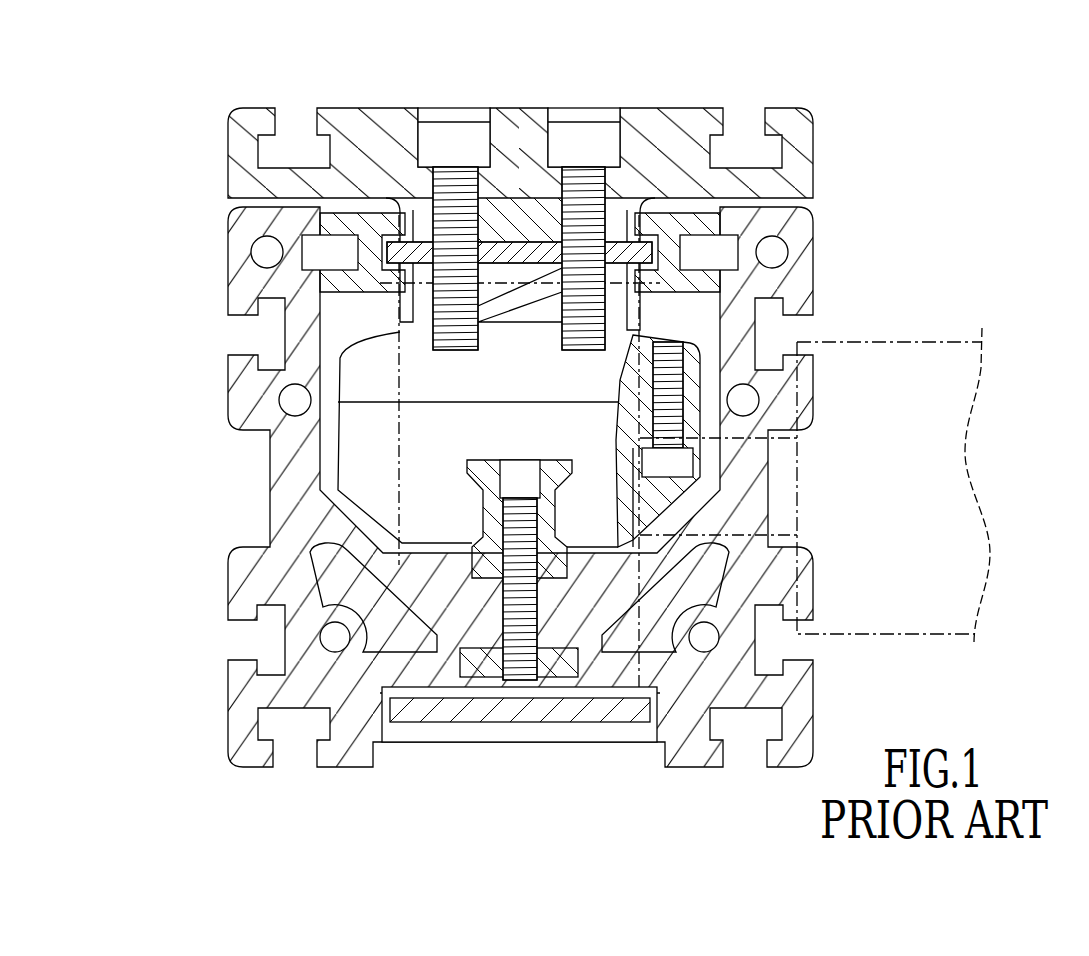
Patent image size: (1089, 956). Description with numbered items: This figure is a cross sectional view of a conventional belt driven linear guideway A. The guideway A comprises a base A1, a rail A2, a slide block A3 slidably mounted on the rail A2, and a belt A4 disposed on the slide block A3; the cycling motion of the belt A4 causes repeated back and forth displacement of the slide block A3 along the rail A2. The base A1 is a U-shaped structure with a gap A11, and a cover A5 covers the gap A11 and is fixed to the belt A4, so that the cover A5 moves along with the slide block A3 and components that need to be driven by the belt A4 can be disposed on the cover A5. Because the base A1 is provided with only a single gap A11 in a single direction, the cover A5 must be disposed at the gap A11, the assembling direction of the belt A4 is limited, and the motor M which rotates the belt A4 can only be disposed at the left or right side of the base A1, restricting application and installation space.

The belt driven linear guideway A is at (558, 424).
The base A1 is at (275, 578).
The rail A2 is at (490, 562).
The slide block A3 is at (688, 350).
The belt A4 is at (520, 245).
The cover A5 is at (685, 118).
The gap A11 is at (614, 230).
The motor M is at (936, 340).